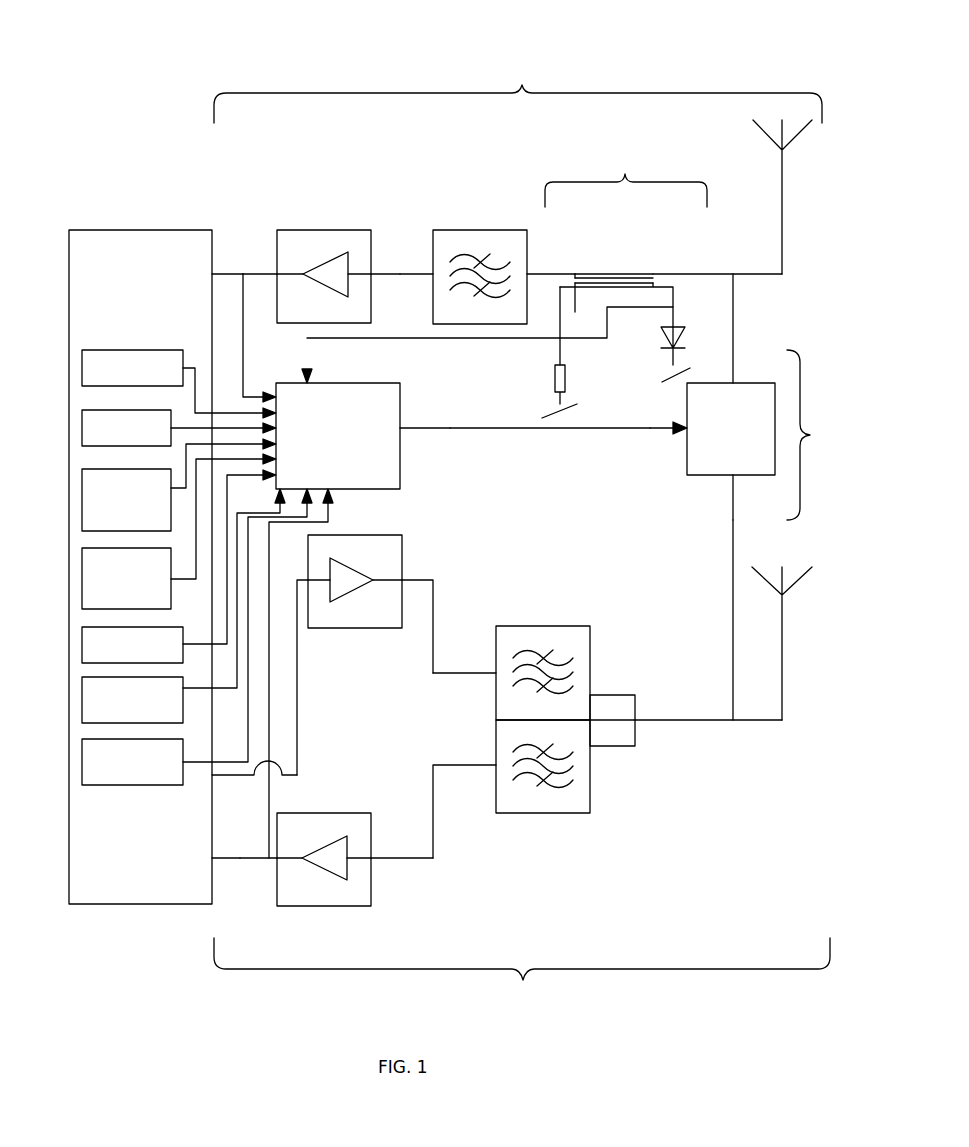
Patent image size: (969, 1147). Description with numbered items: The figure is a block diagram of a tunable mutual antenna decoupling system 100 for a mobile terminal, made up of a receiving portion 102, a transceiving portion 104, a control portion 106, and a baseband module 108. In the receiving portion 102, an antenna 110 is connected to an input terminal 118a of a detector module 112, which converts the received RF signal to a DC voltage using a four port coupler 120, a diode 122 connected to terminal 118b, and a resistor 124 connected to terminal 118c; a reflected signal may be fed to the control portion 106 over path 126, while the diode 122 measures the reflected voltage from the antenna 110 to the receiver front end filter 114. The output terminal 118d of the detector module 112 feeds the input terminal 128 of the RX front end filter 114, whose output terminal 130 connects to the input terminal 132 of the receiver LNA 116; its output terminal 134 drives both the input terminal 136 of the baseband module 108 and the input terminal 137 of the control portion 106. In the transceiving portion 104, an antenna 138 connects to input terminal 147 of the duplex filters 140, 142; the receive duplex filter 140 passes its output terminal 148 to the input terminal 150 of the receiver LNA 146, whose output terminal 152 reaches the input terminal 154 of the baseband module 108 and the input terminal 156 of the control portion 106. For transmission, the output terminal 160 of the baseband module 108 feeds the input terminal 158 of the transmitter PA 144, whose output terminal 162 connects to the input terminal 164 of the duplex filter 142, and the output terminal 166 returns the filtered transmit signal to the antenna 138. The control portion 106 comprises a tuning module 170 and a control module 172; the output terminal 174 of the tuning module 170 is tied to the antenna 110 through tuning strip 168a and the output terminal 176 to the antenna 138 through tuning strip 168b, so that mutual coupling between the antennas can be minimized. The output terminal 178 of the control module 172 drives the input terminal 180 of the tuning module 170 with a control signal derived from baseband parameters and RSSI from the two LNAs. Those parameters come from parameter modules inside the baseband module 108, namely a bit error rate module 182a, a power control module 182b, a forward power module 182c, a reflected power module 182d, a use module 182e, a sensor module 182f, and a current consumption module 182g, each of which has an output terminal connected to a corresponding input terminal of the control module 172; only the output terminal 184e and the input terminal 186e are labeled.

The tunable mutual antenna decoupling system 100 is at (143, 44).
The receiving portion 102 is at (518, 87).
The transceiving portion 104 is at (522, 973).
The control portion 106 is at (822, 435).
The baseband module 108 is at (140, 567).
The antenna 110 is at (783, 205).
The detector module 112 is at (626, 175).
The receiver front end filter 114 is at (465, 232).
The receiver low noise amplifier 116 is at (303, 232).
The input terminal 118a is at (653, 273).
The terminal 118b is at (655, 289).
The terminal 118c is at (581, 308).
The output terminal 118d is at (575, 273).
The four port coupler 120 is at (648, 272).
The diode 122 is at (660, 345).
The resistor 124 is at (556, 378).
The path 126 is at (440, 339).
The input terminal 128 is at (527, 272).
The output terminal 130 is at (433, 270).
The input terminal 132 is at (371, 275).
The output terminal 134 is at (277, 270).
The input terminal 136 is at (212, 275).
The input terminal 137 is at (274, 395).
The antenna 138 is at (783, 650).
The duplex filter 140 is at (592, 802).
The duplex filter 142 is at (592, 672).
The transmitter power amplifier 144 is at (403, 560).
The receiver low noise amplifier 146 is at (371, 838).
The input terminal 147 is at (592, 746).
The output terminal 148 is at (496, 763).
The input terminal 150 is at (371, 880).
The output terminal 152 is at (275, 862).
The input terminal 154 is at (213, 848).
The input terminal 156 is at (330, 490).
The input terminal 158 is at (305, 588).
The output terminal 160 is at (214, 780).
The output terminal 162 is at (402, 580).
The input terminal 164 is at (496, 678).
The output terminal 166 is at (592, 696).
The tuning strip 168a is at (734, 332).
The tuning strip 168b is at (733, 625).
The tuning module 170 is at (687, 470).
The control module 172 is at (400, 478).
The output terminal 174 is at (736, 383).
The output terminal 176 is at (733, 479).
The output terminal 178 is at (420, 413).
The input terminal 180 is at (683, 436).
The bit error rate module 182a is at (132, 368).
The power control module 182b is at (126, 428).
The forward power module 182c is at (126, 500).
The reflected power module 182d is at (126, 578).
The use module 182e is at (132, 645).
The sensor module 182f is at (132, 700).
The current consumption module 182g is at (132, 762).
The output terminal 184e is at (208, 644).
The input terminal 186e is at (272, 488).